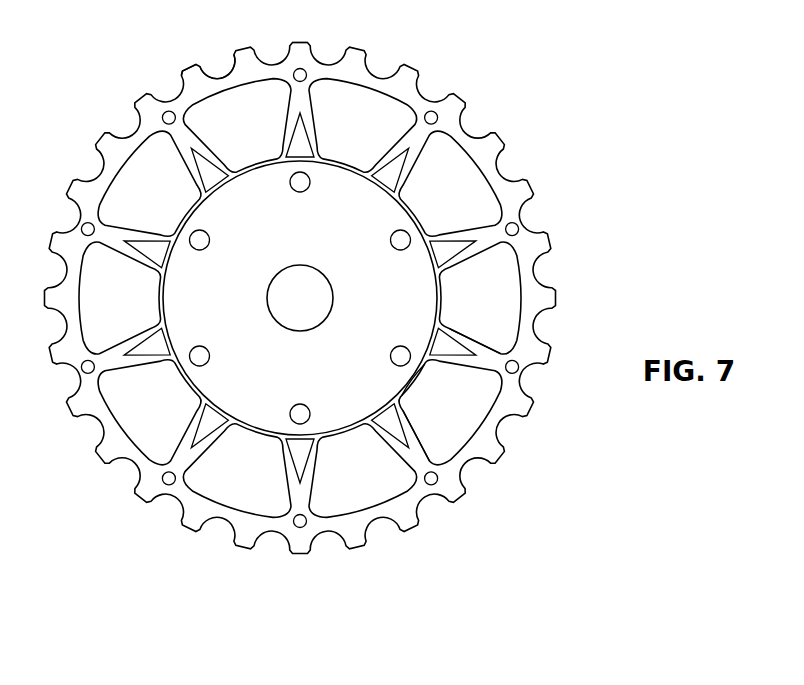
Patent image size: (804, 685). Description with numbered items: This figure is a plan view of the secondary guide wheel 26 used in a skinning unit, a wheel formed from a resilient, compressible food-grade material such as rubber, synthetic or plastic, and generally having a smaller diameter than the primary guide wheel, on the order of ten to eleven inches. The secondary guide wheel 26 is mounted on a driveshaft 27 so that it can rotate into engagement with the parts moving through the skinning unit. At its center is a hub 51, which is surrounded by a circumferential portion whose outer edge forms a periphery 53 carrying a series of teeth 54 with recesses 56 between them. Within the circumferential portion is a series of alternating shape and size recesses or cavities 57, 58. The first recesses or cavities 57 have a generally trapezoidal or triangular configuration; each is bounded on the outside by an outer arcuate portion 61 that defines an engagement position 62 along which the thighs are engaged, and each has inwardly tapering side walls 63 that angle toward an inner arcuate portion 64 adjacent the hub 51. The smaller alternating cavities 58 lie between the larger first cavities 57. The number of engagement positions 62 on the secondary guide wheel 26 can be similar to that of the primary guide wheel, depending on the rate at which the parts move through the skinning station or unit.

The secondary guide wheel 26 is at (553, 110).
The driveshaft 27 is at (322, 297).
The hub 51 is at (317, 242).
The periphery 53 is at (187, 73).
The teeth 54 is at (234, 54).
The recesses 56 is at (274, 61).
The first recesses or cavities 57 is at (380, 488).
The second recesses or cavities 58 is at (300, 462).
The outer arcuate portion 61 is at (547, 306).
The engagement position 62 is at (387, 50).
The inwardly tapering side walls 63 is at (478, 348).
The inner arcuate portion 64 is at (408, 381).